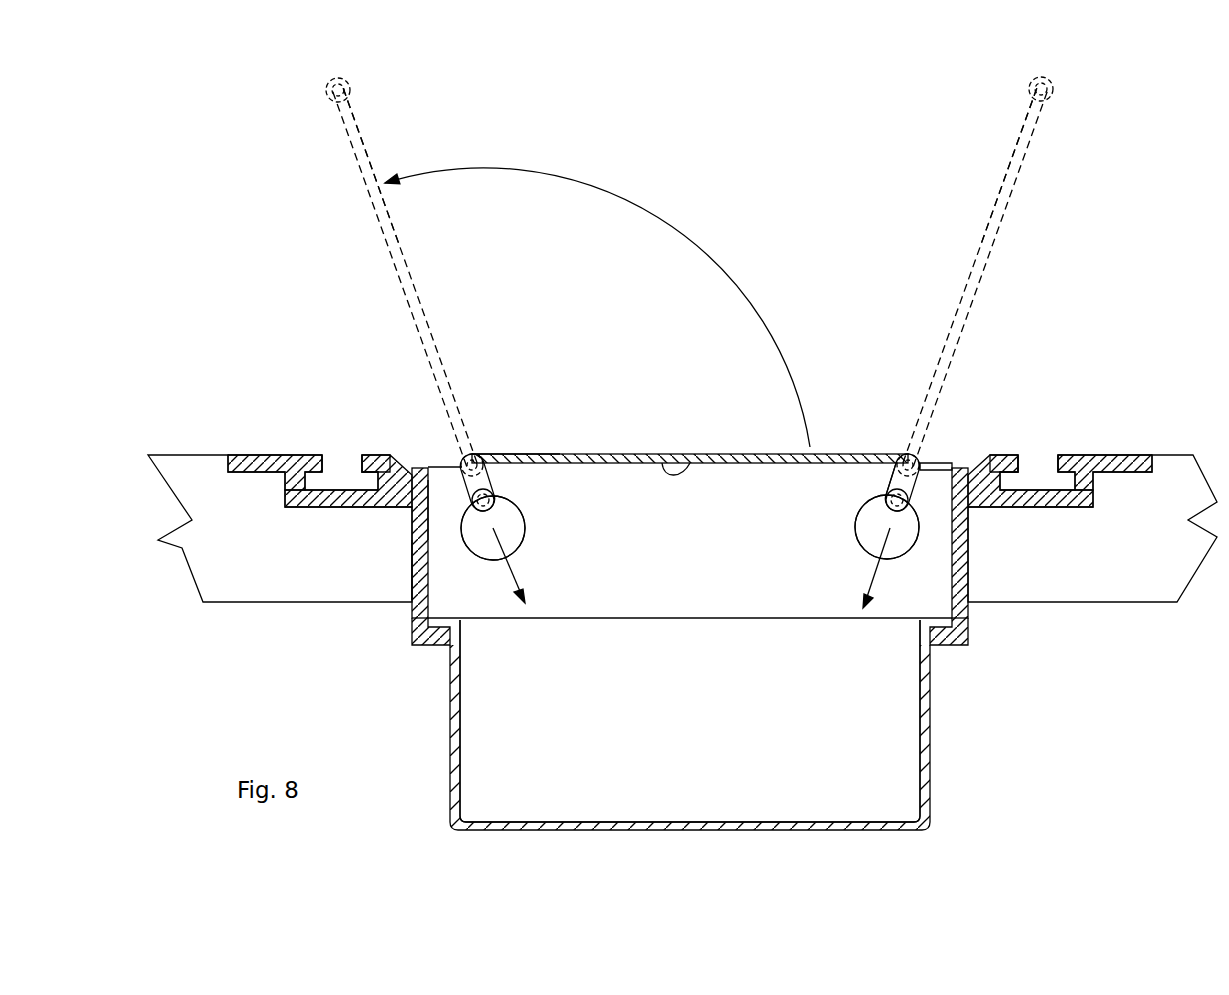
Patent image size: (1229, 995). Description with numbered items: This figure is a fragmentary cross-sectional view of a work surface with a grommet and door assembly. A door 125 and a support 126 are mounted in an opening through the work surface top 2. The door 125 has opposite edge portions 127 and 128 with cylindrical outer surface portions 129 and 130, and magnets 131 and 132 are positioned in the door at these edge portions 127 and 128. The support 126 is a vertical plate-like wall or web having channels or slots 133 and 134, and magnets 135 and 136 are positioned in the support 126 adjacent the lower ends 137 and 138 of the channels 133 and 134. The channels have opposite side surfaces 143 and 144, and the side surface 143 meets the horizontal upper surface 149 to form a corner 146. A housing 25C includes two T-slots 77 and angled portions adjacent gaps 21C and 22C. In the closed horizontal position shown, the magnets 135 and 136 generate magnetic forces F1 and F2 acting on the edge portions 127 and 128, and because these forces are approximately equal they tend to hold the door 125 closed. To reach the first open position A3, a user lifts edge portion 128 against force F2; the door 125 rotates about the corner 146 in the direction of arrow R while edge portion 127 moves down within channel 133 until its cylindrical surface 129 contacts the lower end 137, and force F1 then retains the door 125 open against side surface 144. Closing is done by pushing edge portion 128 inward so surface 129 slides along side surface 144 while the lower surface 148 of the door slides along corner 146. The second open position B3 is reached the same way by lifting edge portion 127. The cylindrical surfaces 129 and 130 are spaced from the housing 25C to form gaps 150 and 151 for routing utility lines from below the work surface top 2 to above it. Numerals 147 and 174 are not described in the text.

The work surface top 2 is at (1195, 455).
The gap 21C is at (937, 485).
The gap 22C is at (448, 462).
The housing 25C is at (410, 635).
The T-slot 77 is at (323, 463).
The door 125 is at (377, 240).
The support 126 is at (958, 460).
The edge portion 127 is at (1052, 84).
The edge portion 128 is at (326, 82).
The cylindrical outer surface portion 129 is at (440, 457).
The cylindrical outer surface portion 130 is at (950, 457).
The magnet 131 is at (480, 455).
The magnet 132 is at (900, 458).
The channel 133 is at (492, 477).
The channel 134 is at (887, 492).
The magnet 135 is at (526, 530).
The magnet 136 is at (878, 550).
The lower end 137 is at (478, 512).
The lower end 138 is at (877, 515).
The side surface 143 is at (427, 550).
The side surface 144 is at (412, 528).
The corner 146 is at (530, 455).
The link portion 147 is at (888, 470).
The lower surface 148 is at (690, 455).
The horizontal upper surface 149 is at (623, 457).
The gap 150 is at (430, 458).
The gap 151 is at (972, 456).
The flange 174 is at (398, 457).
The first open position A3 is at (353, 140).
The second open position B3 is at (1030, 160).
The arrow R is at (648, 208).
The magnetic force F1 is at (530, 568).
The magnetic force F2 is at (888, 570).